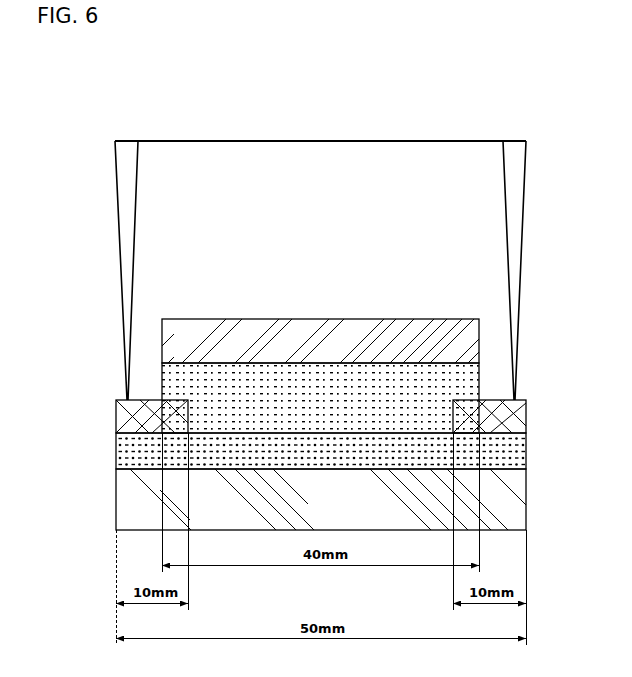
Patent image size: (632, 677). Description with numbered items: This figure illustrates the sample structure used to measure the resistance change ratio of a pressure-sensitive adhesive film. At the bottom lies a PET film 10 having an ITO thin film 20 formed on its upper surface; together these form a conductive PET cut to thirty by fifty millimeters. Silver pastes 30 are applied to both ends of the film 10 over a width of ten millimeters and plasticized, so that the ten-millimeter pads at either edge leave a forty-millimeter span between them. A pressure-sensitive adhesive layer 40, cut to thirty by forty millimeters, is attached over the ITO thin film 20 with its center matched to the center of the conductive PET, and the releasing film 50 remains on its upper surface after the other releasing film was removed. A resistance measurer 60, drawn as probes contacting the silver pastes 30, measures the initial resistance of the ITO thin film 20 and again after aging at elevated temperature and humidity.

The PET film 10 is at (118, 492).
The ITO thin film 20 is at (118, 447).
The silver pastes 30 is at (118, 412).
The pressure-sensitive adhesive layer 40 is at (170, 380).
The releasing film 50 is at (175, 327).
The resistance measurer 60 is at (320, 141).